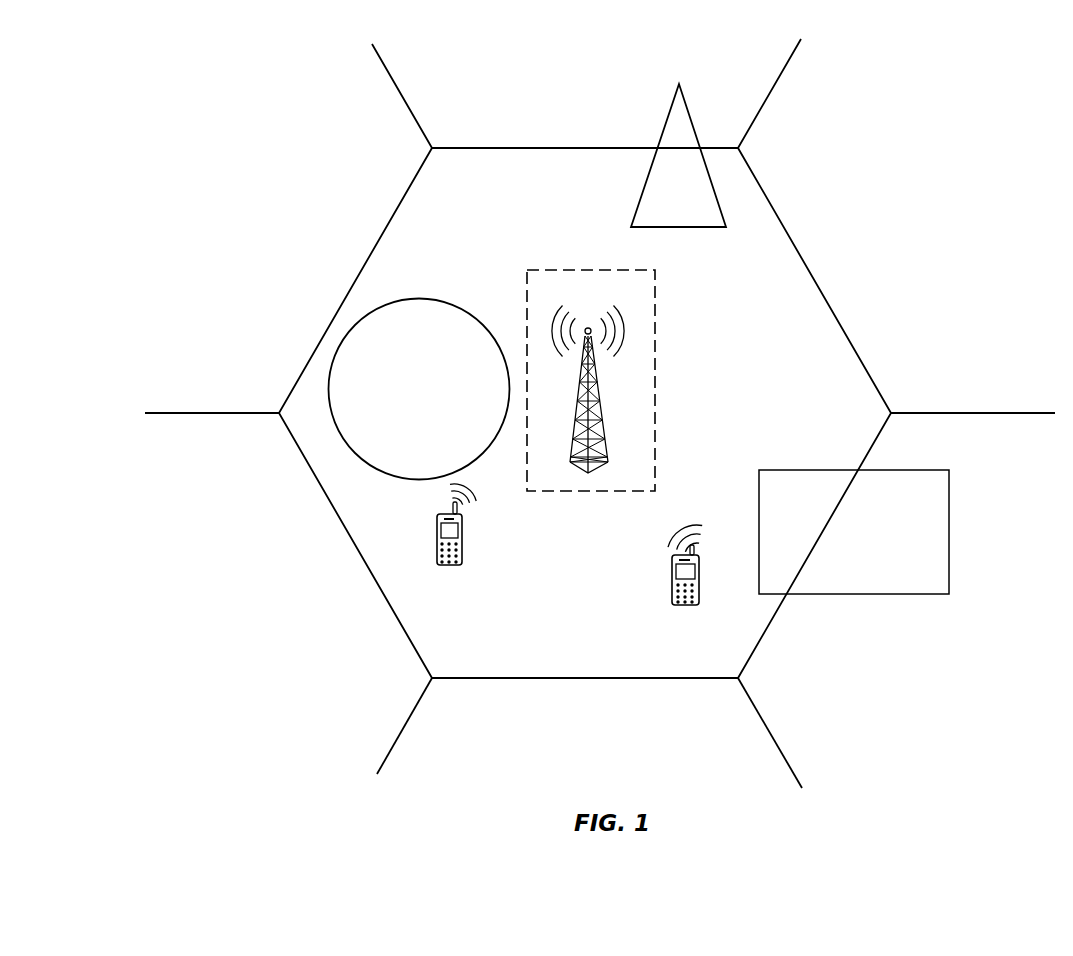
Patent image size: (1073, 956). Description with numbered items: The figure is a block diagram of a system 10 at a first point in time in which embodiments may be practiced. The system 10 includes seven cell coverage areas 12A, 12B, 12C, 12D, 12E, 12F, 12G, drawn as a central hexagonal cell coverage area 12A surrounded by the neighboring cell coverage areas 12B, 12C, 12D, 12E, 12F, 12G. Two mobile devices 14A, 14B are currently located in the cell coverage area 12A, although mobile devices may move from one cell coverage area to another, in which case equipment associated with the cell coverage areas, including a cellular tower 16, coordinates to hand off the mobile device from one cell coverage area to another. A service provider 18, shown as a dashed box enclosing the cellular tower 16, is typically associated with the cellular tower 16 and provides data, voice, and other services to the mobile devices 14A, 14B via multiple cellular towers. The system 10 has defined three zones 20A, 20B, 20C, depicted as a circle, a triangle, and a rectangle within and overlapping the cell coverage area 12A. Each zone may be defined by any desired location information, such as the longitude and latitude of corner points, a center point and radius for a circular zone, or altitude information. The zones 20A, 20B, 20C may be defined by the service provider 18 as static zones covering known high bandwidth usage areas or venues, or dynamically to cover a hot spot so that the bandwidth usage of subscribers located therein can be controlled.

The system 10 is at (910, 84).
The cell coverage area 12A is at (787, 353).
The cell coverage area 12B is at (604, 106).
The cell coverage area 12C is at (879, 263).
The cell coverage area 12D is at (845, 666).
The cell coverage area 12E is at (599, 723).
The cell coverage area 12F is at (322, 573).
The cell coverage area 12G is at (326, 263).
The mobile device 14A is at (435, 520).
The mobile device 14B is at (670, 562).
The cellular tower 16 is at (606, 453).
The service provider 18 is at (653, 288).
The zone 20A is at (434, 393).
The zone 20B is at (698, 206).
The zone 20C is at (807, 505).